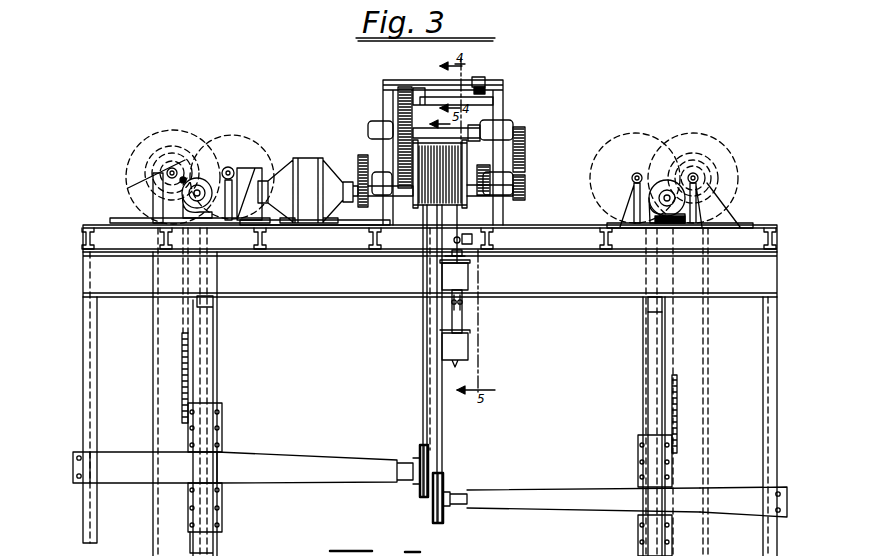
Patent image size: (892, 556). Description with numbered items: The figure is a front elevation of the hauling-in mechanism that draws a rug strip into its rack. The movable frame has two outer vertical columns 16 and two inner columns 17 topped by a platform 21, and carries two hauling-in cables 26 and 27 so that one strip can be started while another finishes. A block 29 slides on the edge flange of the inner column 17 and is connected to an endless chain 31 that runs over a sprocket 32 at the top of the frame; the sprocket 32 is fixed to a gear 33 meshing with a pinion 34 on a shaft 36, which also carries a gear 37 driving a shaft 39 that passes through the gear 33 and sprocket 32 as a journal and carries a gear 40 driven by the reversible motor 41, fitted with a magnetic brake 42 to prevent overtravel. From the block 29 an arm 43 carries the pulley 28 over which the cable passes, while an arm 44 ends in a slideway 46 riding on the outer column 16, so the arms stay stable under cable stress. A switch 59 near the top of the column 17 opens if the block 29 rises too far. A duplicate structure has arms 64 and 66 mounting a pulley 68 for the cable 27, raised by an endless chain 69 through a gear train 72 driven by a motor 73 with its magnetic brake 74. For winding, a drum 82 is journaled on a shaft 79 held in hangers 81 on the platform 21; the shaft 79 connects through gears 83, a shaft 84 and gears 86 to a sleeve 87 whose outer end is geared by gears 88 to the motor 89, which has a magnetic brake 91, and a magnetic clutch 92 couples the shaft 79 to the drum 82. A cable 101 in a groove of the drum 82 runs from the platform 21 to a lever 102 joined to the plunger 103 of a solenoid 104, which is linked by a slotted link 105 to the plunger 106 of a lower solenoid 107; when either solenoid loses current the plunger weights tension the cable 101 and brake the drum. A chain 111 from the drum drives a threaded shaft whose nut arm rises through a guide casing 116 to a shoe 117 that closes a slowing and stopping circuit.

The outer vertical column 16 is at (88, 363).
The inner column 17 is at (217, 363).
The platform 21 is at (573, 216).
The hauling-in cable 26 is at (423, 410).
The hauling-in cable 27 is at (442, 437).
The pulley 28 is at (420, 490).
The block 29 is at (222, 418).
The endless chain 31 is at (184, 380).
The sprocket 32 is at (160, 168).
The gear 33 is at (145, 135).
The pinion 34 is at (197, 178).
The shaft 36 is at (228, 167).
The gear 37 is at (262, 128).
The shaft 39 is at (168, 176).
The gear 40 is at (176, 165).
The reversible motor 41 is at (222, 223).
The magnetic brake 42 is at (170, 204).
The arm 43 is at (296, 463).
The arm 44 is at (138, 473).
The slideway 46 is at (73, 470).
The switch 59 is at (648, 305).
The arm 64 is at (560, 490).
The arm 66 is at (734, 495).
The pulley 68 is at (446, 486).
The endless chain 69 is at (728, 555).
The gear train 72 is at (654, 126).
The motor 73 is at (655, 182).
The magnetic brake 74 is at (690, 211).
The shaft 79 is at (527, 181).
The hangers 81 is at (385, 118).
The drum 82 is at (418, 226).
The gears 83 is at (527, 140).
The shaft 84 is at (470, 130).
The gears 86 is at (395, 168).
The sleeve 87 is at (341, 226).
The gears 88 is at (362, 162).
The motor 89 is at (320, 192).
The magnetic brake 91 is at (257, 170).
The magnetic clutch 92 is at (491, 165).
The cable 101 is at (460, 229).
The lever 102 is at (474, 240).
The plunger 103 is at (470, 261).
The solenoid 104 is at (468, 275).
The slotted link 105 is at (464, 305).
The plunger 106 is at (452, 320).
The solenoid 107 is at (468, 345).
The chain 111 is at (398, 102).
The guide casing 116 is at (432, 88).
The shoe 117 is at (486, 90).